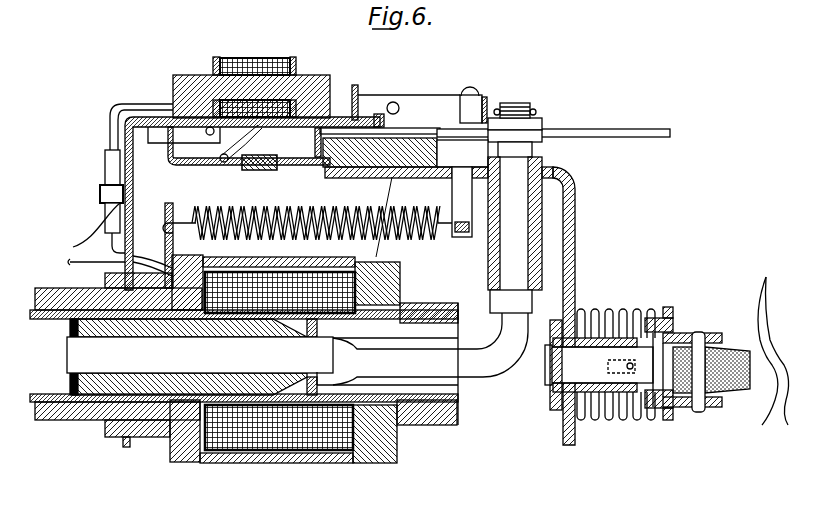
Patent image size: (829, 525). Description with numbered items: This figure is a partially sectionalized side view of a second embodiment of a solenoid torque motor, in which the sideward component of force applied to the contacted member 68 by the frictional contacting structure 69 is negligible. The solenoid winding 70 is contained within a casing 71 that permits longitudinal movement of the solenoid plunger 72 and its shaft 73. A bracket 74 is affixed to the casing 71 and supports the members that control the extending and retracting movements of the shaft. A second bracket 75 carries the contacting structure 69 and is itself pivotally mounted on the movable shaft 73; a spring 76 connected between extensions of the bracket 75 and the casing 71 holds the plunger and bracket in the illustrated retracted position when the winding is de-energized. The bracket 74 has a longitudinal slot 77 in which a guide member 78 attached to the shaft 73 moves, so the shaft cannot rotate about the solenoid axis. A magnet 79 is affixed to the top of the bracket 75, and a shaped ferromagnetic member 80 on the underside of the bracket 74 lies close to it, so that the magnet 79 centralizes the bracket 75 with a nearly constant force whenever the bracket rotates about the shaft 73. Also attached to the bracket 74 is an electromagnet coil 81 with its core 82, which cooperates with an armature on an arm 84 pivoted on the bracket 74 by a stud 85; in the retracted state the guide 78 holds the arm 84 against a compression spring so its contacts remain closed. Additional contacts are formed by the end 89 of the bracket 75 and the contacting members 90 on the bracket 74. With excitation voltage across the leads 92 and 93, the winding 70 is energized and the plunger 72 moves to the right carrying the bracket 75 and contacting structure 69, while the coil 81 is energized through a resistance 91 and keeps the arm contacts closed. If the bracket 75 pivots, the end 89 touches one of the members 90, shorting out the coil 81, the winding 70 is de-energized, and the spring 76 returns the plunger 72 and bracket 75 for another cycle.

The contacted member 68 is at (761, 427).
The contacting structure 69 is at (700, 323).
The solenoid winding 70 is at (270, 432).
The casing 71 is at (395, 281).
The solenoid plunger 72 is at (100, 380).
The plunger shaft 73 is at (521, 107).
The bracket 74 is at (134, 181).
The bracket 75 is at (288, 168).
The spring 76 is at (338, 211).
The longitudinal slot 77 is at (609, 129).
The guide member 78 is at (544, 126).
The magnet 79 is at (436, 151).
The ferromagnetic member 80 is at (318, 141).
The electromagnet coil 81 is at (255, 60).
The core 82 is at (310, 78).
The arm 84 is at (422, 100).
The stud 85 is at (473, 93).
The end of bracket 89 is at (176, 160).
The contacting members 90 is at (157, 143).
The resistance 91 is at (105, 166).
The lead 92 is at (70, 264).
The lead 93 is at (73, 246).